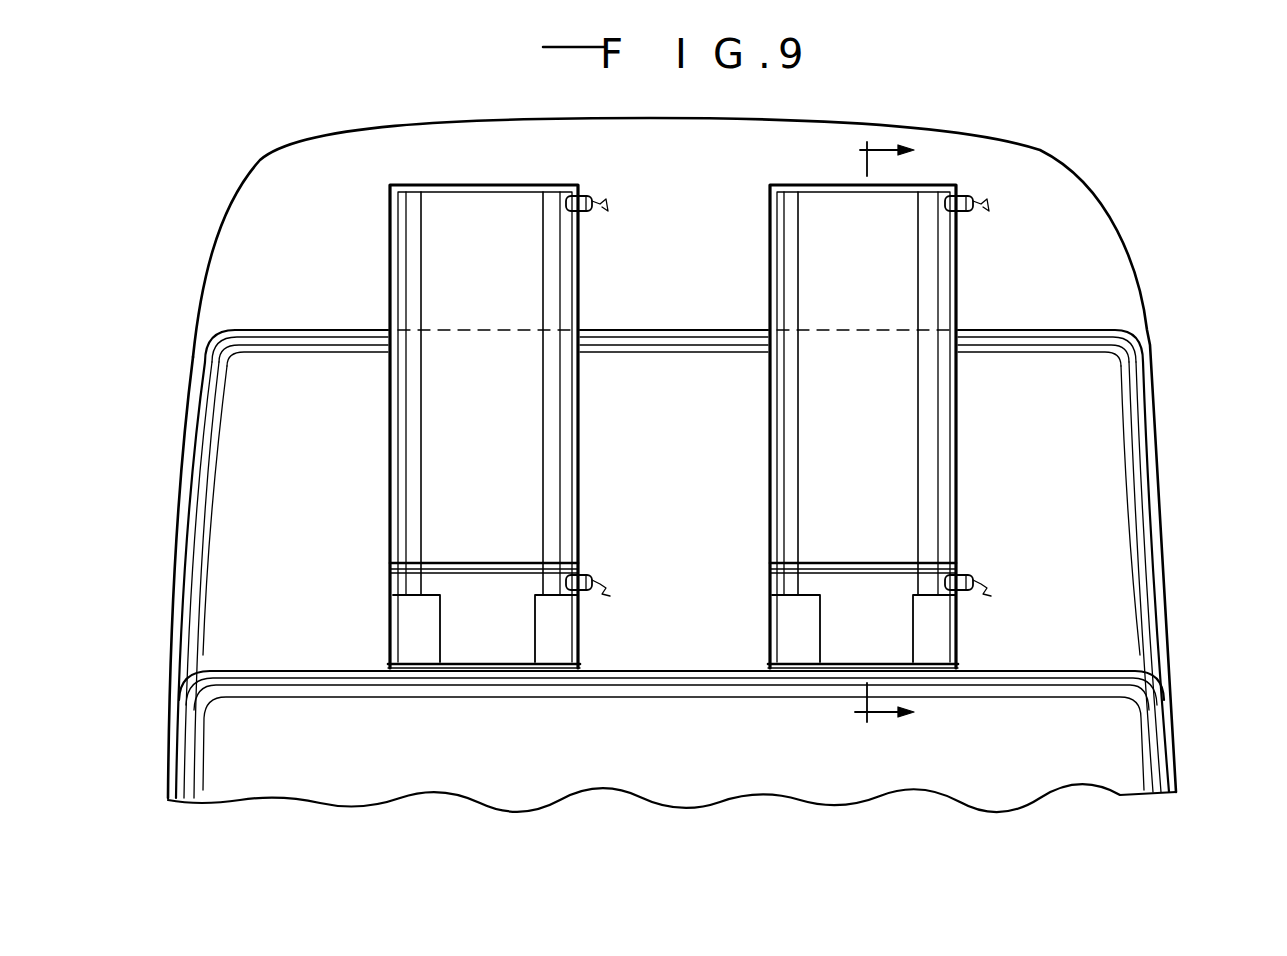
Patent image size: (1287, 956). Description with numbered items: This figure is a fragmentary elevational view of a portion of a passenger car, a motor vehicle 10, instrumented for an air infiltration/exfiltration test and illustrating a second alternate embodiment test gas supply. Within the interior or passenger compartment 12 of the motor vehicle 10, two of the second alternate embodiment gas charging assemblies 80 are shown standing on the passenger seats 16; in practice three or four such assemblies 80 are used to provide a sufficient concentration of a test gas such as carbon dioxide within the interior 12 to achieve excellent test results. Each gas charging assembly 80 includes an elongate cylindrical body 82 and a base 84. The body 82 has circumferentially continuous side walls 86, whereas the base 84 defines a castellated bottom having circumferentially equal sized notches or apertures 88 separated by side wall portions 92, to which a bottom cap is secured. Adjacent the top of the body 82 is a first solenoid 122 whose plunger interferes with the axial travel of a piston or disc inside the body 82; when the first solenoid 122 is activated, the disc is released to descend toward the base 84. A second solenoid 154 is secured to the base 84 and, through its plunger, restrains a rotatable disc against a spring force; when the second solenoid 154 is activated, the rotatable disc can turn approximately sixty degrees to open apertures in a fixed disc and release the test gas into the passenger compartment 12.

The motor vehicle 10 is at (914, 432).
The interior or passenger compartment 12 is at (684, 271).
The passenger seats 16 is at (1140, 405).
The second alternate embodiment gas charging assembly 80 is at (956, 112).
The elongate cylindrical body 82 is at (390, 420).
The base 84 is at (390, 582).
The side walls 86 is at (500, 467).
The notches or apertures 88 is at (558, 623).
The side wall portions 92 is at (503, 638).
The first solenoid 122 is at (590, 195).
The second solenoid 154 is at (585, 574).